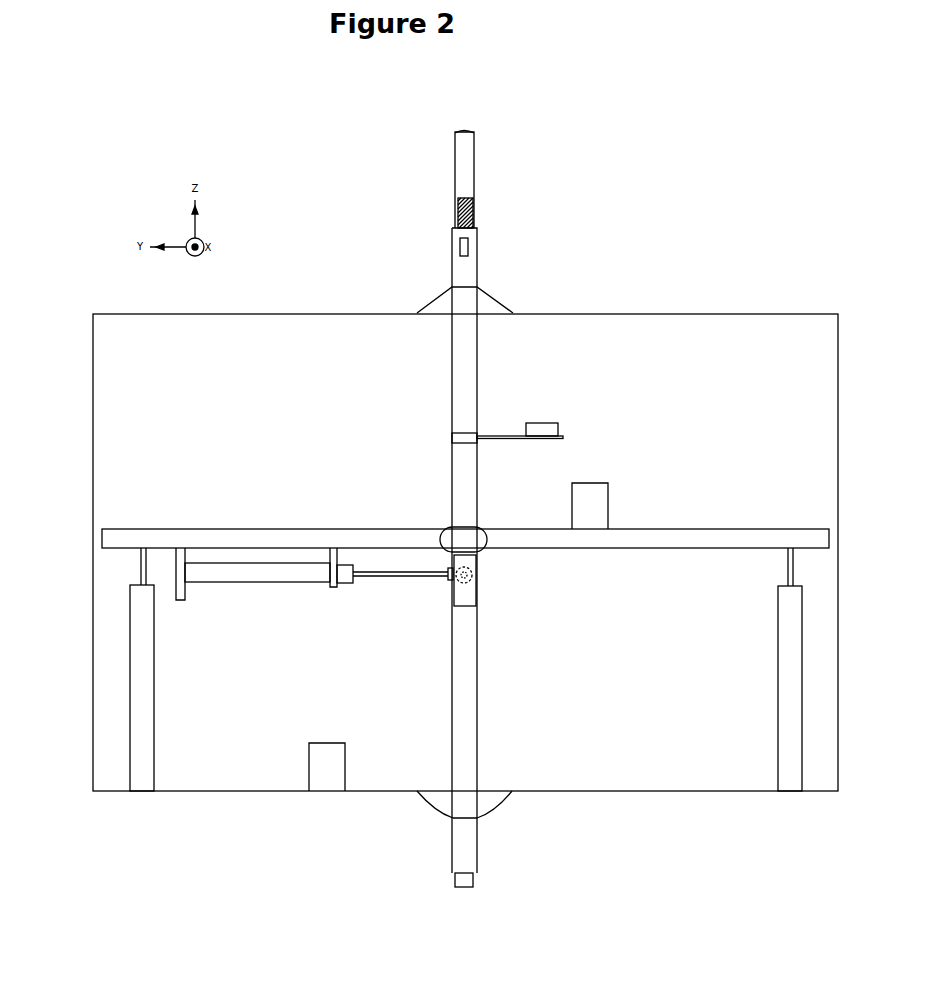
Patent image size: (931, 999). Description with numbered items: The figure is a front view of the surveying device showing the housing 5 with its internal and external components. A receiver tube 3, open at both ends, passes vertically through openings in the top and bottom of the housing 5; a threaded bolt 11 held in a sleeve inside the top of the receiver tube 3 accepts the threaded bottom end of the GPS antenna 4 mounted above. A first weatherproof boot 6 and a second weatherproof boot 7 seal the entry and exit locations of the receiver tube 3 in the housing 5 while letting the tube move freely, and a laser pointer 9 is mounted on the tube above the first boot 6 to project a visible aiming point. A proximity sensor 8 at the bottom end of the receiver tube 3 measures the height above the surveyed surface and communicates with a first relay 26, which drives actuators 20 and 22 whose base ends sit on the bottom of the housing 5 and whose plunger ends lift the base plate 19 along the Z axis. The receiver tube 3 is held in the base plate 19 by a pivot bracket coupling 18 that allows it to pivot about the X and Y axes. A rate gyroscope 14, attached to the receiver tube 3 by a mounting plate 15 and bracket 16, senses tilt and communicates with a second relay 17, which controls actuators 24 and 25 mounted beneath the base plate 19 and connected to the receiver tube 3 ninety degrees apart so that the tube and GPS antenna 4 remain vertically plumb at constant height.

The receiver tube 3 is at (452, 270).
The GPS antenna 4 is at (453, 217).
The housing 5 is at (92, 385).
The first weatherproof boot 6 is at (497, 303).
The second weatherproof boot 7 is at (493, 806).
The proximity sensor 8 is at (475, 880).
The laser pointer 9 is at (459, 247).
The threaded bolt 11 is at (475, 213).
The rate gyroscope 14 is at (543, 423).
The mounting plate 15 is at (497, 436).
The bracket 16 is at (452, 437).
The second relay 17 is at (608, 506).
The pivot bracket coupling 18 is at (448, 528).
The base plate 19 is at (290, 530).
The actuator 20 is at (155, 687).
The actuator 22 is at (778, 646).
The actuator 24 is at (270, 583).
The actuator 25 is at (453, 582).
The first relay 26 is at (309, 766).